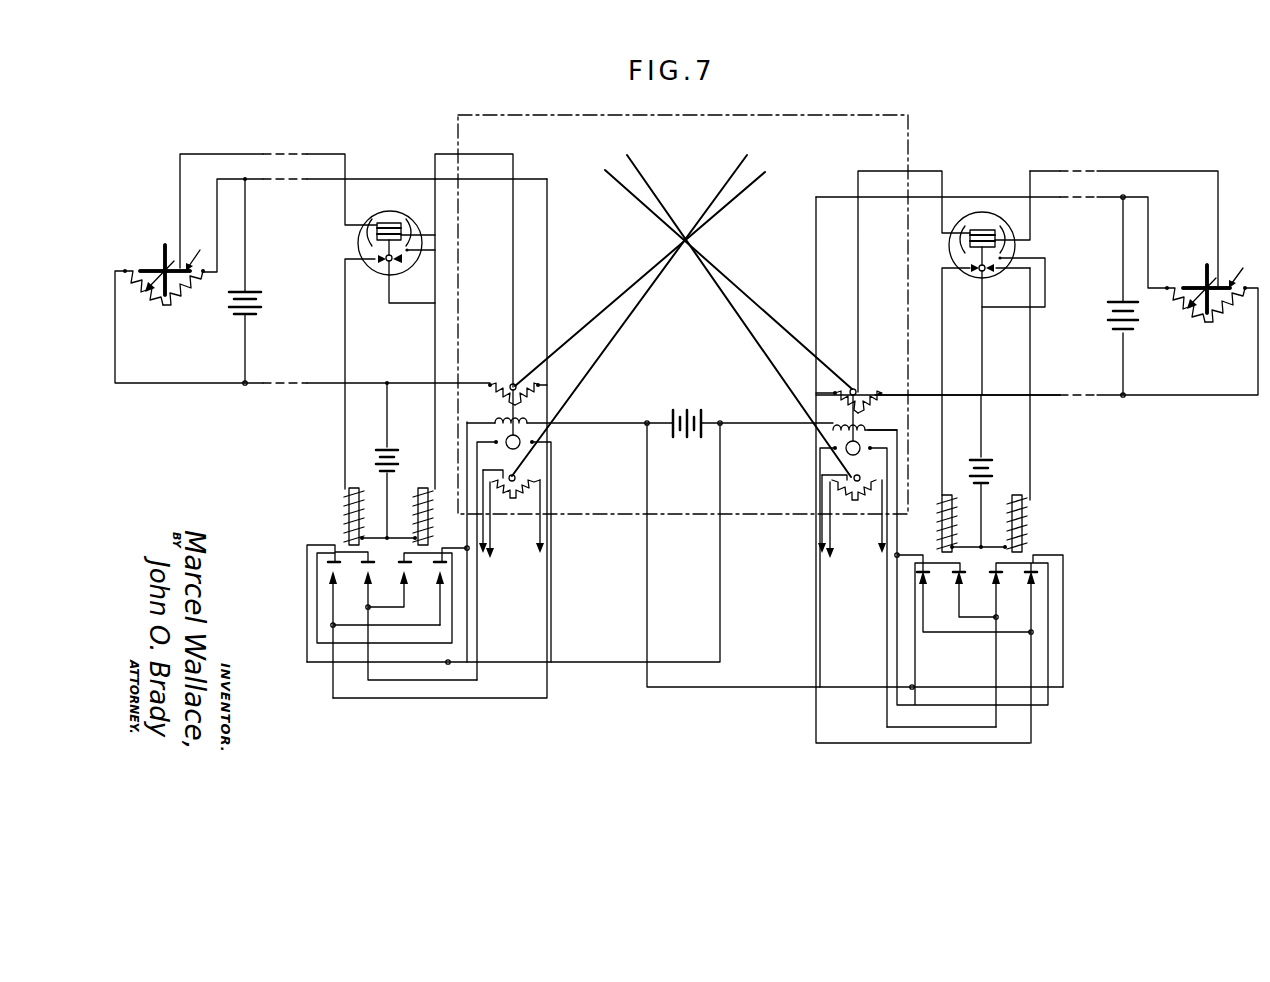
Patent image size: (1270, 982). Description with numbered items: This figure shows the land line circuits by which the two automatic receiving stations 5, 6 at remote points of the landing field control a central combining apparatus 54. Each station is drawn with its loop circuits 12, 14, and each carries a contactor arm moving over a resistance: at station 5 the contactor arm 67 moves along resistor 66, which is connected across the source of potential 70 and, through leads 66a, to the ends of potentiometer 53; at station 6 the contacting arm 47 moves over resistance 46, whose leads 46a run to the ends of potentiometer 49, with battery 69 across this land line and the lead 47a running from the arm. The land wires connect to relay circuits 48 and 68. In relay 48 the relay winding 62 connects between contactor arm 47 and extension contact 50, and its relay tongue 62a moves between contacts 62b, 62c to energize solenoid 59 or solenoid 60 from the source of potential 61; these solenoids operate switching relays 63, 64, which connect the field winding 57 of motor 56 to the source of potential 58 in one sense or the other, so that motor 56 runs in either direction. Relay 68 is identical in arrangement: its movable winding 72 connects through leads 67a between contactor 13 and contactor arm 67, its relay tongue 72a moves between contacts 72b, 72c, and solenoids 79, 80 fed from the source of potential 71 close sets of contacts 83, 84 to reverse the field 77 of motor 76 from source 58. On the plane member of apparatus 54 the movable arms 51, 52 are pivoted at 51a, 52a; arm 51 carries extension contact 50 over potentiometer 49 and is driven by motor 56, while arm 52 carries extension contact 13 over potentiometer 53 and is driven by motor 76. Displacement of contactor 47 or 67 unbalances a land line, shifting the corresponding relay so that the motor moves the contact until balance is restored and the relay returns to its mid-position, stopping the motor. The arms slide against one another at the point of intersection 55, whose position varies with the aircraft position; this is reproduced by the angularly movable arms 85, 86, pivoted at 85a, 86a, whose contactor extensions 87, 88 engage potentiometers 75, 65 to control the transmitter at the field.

The automatic receiving station 5 is at (164, 270).
The automatic receiving station 6 is at (1195, 302).
The loop circuit 12 is at (160, 258).
The extension contact 13 is at (504, 380).
The loop circuit 14 is at (714, 287).
The resistance 46 is at (1210, 328).
The leads 46a is at (1148, 250).
The contacting arm 47 is at (1179, 316).
The lead 47a is at (878, 166).
The relay 48 is at (991, 230).
The potentiometer 49 is at (866, 398).
The extension contact 50 is at (855, 382).
The movable arm 51 is at (736, 284).
The pivot 51a is at (838, 385).
The movable arm 52 is at (599, 297).
The pivot 52a is at (509, 377).
The potentiometer 53 is at (536, 388).
The central combining apparatus 54 is at (706, 118).
The point of intersection 55 is at (687, 248).
The motor 56 is at (826, 456).
The field winding 57 is at (868, 430).
The source of potential 58 is at (854, 548).
The solenoid 59 is at (956, 535).
The solenoid 60 is at (1024, 516).
The source of potential 61 is at (998, 470).
The relay winding 62 is at (1015, 348).
The relay tongue 62a is at (986, 294).
The contact 62b is at (1016, 266).
The contact 62c is at (972, 276).
The switching relay 63 is at (976, 657).
The switching relay 64 is at (1013, 601).
The potentiometer 65 is at (856, 550).
The resistor 66 is at (188, 308).
The leads 66a is at (253, 188).
The contactor arm 67 is at (160, 310).
The leads 67a is at (278, 192).
The relay 68 is at (408, 182).
The battery 69 is at (1106, 324).
The source of potential 70 is at (262, 304).
The source of potential 71 is at (378, 448).
The movable winding 72 is at (369, 335).
The relay tongue 72a is at (386, 267).
The contact 72b is at (372, 260).
The contact 72c is at (407, 268).
The potentiometer 75 is at (502, 523).
The motor 76 is at (519, 446).
The field 77 is at (536, 417).
The solenoid 79 is at (344, 506).
The solenoid 80 is at (409, 521).
The set of contacts 83 is at (403, 634).
The set of contacts 84 is at (406, 598).
The angularly movable arm 85 is at (619, 345).
The pivot 85a is at (530, 487).
The angularly movable arm 86 is at (739, 316).
The pivot 86a is at (833, 482).
The contactor extension 87 is at (548, 500).
The contactor extension 88 is at (844, 515).